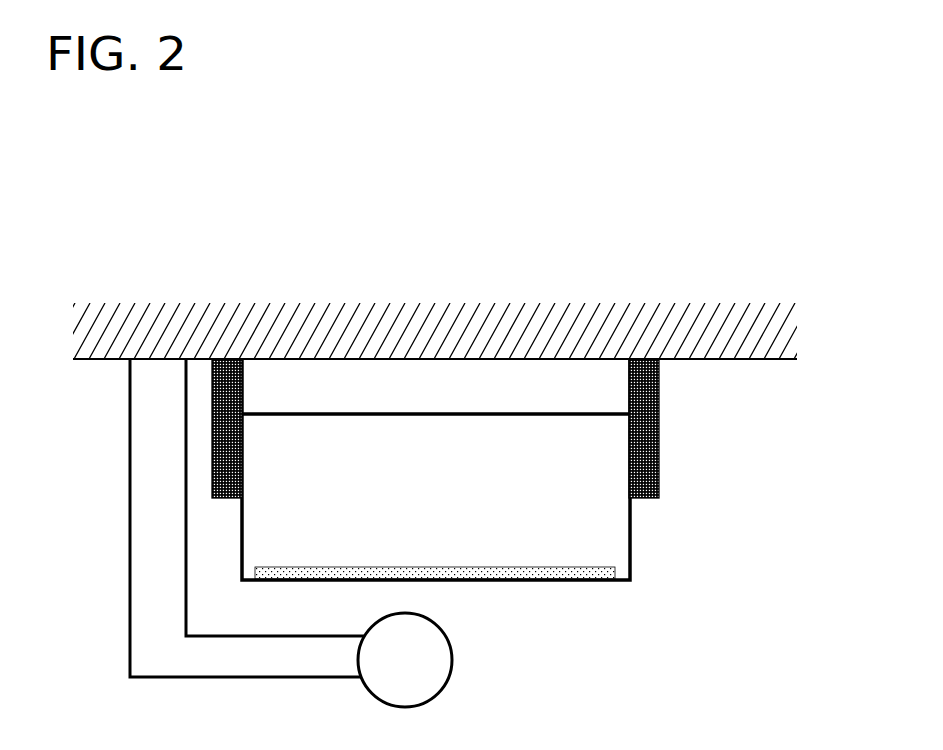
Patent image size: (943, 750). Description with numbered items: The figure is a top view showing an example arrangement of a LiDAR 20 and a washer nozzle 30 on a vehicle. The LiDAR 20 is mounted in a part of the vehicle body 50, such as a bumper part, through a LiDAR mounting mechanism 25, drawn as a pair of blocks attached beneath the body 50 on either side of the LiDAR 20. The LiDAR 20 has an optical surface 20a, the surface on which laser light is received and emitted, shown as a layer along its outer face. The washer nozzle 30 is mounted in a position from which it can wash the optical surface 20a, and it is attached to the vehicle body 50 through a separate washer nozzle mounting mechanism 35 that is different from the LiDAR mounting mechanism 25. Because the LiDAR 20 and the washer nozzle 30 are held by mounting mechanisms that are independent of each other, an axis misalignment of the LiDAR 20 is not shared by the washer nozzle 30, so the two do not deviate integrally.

The vehicle body 50 is at (568, 325).
The washer nozzle mounting mechanism 35 is at (158, 500).
The LiDAR 20 is at (632, 541).
The LiDAR mounting mechanism 25 is at (245, 382).
The optical surface 20a is at (578, 573).
The washer nozzle 30 is at (452, 648).